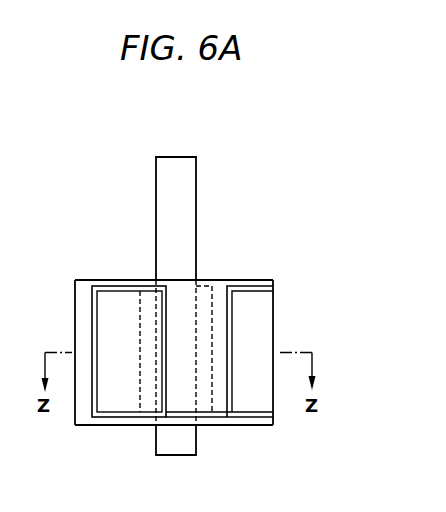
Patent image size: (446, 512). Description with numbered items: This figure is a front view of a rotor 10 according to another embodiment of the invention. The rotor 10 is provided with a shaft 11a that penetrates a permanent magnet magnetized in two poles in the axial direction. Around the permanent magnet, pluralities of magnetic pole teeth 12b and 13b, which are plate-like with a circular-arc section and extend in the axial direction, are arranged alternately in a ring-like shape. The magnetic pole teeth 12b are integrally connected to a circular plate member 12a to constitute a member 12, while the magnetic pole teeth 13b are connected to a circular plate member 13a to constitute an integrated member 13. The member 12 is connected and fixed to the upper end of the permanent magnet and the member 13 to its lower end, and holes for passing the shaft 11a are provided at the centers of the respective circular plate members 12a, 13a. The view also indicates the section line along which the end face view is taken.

The rotor 10 is at (276, 225).
The shaft 11a is at (176, 168).
The member 12 is at (294, 284).
The circular plate member 12a is at (218, 286).
The magnetic pole teeth 12b is at (83, 328).
The member 13 is at (281, 433).
The circular plate member 13a is at (252, 411).
The magnetic pole teeth 13b is at (266, 322).